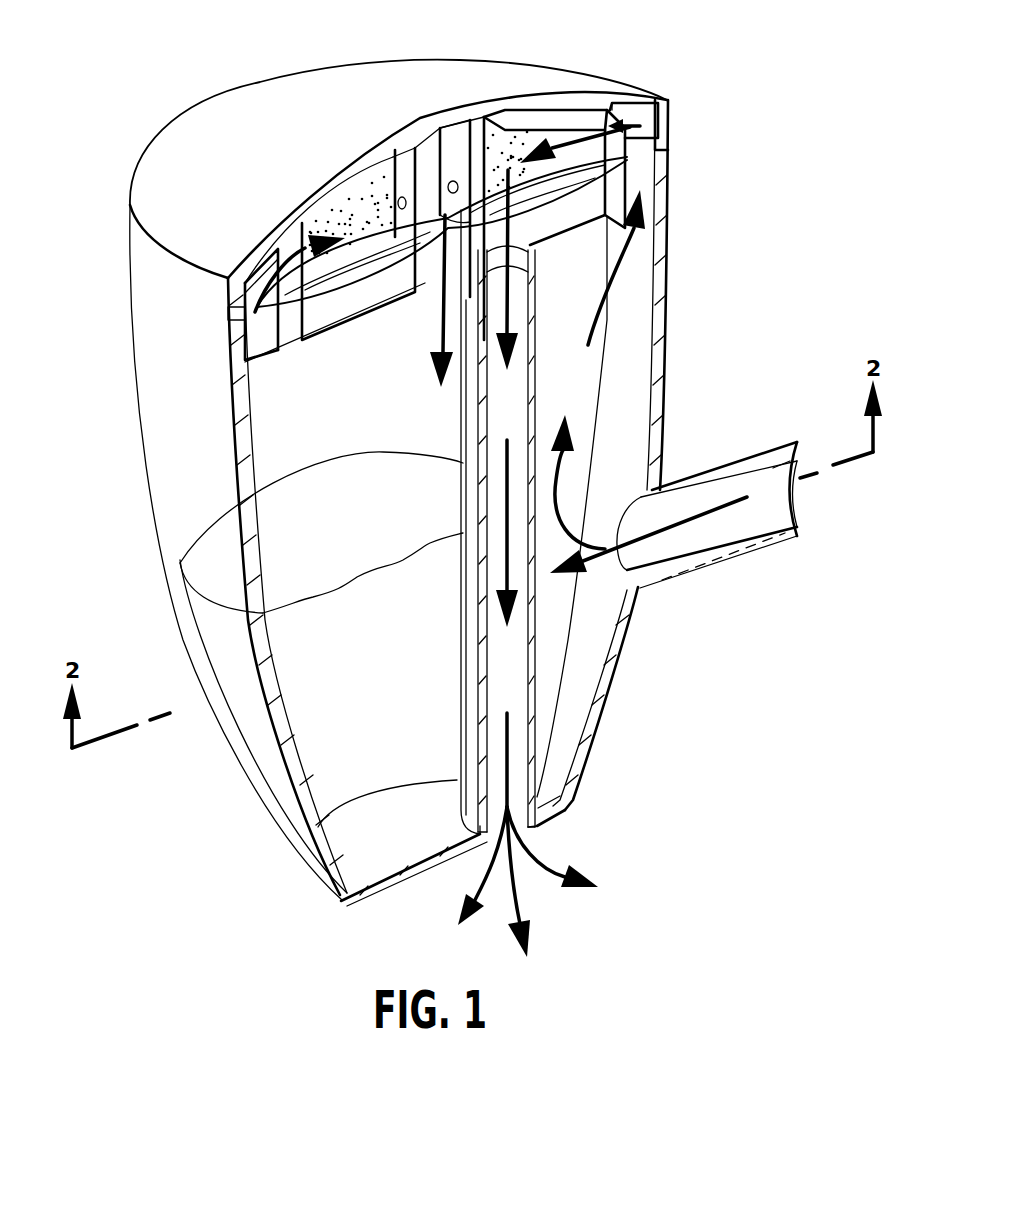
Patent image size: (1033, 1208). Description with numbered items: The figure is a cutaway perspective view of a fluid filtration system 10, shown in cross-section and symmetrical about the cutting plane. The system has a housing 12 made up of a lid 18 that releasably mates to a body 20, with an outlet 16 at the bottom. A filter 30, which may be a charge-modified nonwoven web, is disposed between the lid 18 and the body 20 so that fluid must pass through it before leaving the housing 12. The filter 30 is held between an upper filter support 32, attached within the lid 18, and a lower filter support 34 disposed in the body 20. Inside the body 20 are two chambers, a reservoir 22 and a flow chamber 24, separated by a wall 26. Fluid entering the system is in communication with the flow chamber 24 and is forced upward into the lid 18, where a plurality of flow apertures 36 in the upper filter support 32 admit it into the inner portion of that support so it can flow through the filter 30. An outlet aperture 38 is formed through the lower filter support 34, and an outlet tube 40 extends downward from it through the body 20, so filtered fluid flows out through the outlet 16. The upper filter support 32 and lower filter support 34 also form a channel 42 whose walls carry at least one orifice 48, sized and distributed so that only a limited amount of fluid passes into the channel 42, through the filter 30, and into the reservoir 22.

The fluid filtration system 10 is at (790, 326).
The housing 12 is at (667, 177).
The outlet 16 is at (492, 830).
The lid 18 is at (480, 80).
The body 20 is at (667, 317).
The reservoir 22 is at (317, 718).
The flow chamber 24 is at (577, 378).
The wall 26 is at (562, 643).
The filter 30 is at (512, 157).
The upper filter support 32 is at (620, 145).
The lower filter support 34 is at (292, 363).
The flow apertures 36 is at (577, 122).
The outlet aperture 38 is at (520, 257).
The outlet tube 40 is at (497, 397).
The channel 42 is at (425, 283).
The orifice 48 is at (453, 181).